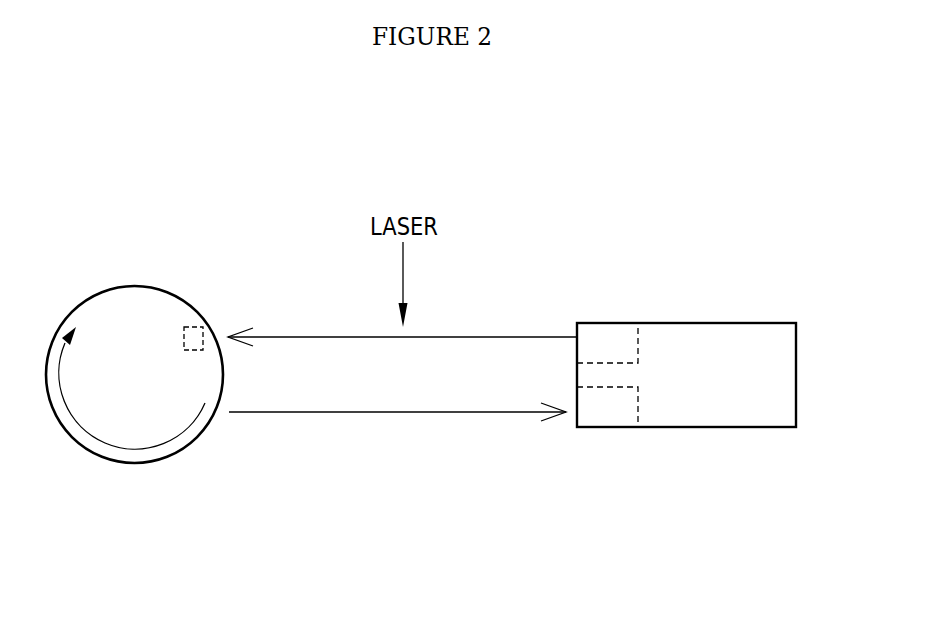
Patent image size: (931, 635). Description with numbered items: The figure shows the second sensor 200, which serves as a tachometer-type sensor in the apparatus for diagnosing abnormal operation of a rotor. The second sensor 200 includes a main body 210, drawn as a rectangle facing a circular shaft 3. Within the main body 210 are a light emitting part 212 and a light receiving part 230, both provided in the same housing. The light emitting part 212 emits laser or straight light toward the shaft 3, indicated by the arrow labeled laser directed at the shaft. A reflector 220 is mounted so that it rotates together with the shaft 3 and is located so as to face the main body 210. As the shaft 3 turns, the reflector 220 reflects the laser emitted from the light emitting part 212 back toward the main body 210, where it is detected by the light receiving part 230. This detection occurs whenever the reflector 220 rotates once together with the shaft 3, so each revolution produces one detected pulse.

The shaft 3 is at (134, 440).
The second sensor 200 is at (773, 188).
The main body 210 is at (735, 323).
The light emitting part 212 is at (609, 338).
The reflector 220 is at (193, 328).
The light receiving part 230 is at (603, 410).